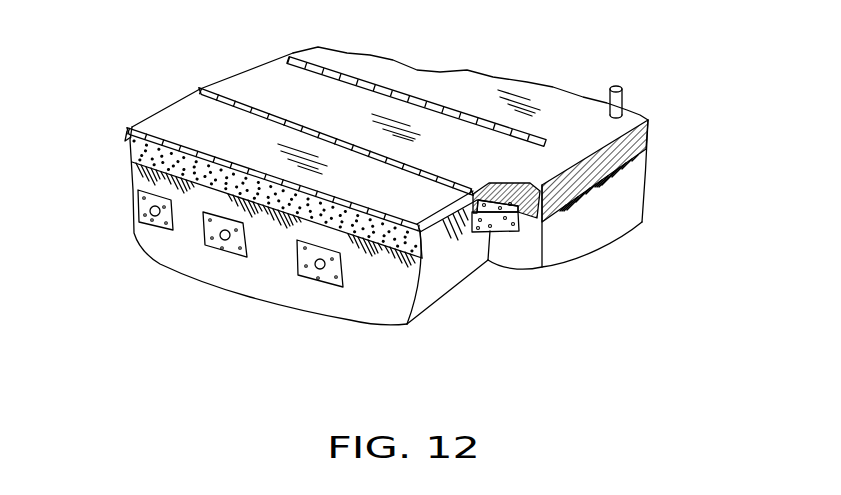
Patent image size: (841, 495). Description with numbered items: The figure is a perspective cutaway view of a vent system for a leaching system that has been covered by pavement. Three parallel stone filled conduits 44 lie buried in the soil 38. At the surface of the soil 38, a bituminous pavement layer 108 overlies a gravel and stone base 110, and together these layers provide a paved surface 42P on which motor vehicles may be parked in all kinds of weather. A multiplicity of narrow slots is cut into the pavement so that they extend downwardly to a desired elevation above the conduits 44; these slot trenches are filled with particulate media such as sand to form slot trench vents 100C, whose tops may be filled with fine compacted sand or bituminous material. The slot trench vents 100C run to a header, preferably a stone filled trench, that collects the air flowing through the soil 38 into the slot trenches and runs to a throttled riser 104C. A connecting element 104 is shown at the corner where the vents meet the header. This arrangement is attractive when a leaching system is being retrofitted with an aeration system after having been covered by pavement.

The soil 38 is at (152, 243).
The paved surface 42P is at (468, 90).
The stone filled conduits 44 is at (228, 250).
The slot trench vents 100C is at (349, 75).
The corner connector block 104 is at (494, 263).
The throttled riser 104C is at (623, 86).
The bituminous pavement layer 108 is at (652, 143).
The gravel and stone base 110 is at (599, 183).